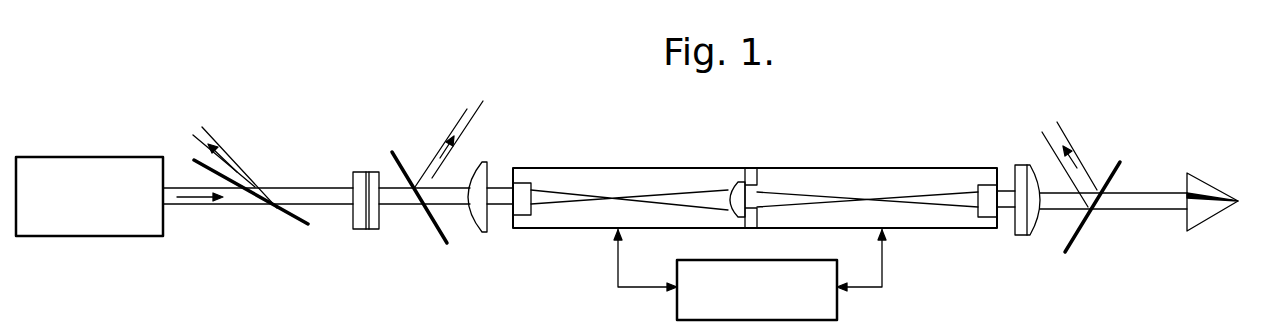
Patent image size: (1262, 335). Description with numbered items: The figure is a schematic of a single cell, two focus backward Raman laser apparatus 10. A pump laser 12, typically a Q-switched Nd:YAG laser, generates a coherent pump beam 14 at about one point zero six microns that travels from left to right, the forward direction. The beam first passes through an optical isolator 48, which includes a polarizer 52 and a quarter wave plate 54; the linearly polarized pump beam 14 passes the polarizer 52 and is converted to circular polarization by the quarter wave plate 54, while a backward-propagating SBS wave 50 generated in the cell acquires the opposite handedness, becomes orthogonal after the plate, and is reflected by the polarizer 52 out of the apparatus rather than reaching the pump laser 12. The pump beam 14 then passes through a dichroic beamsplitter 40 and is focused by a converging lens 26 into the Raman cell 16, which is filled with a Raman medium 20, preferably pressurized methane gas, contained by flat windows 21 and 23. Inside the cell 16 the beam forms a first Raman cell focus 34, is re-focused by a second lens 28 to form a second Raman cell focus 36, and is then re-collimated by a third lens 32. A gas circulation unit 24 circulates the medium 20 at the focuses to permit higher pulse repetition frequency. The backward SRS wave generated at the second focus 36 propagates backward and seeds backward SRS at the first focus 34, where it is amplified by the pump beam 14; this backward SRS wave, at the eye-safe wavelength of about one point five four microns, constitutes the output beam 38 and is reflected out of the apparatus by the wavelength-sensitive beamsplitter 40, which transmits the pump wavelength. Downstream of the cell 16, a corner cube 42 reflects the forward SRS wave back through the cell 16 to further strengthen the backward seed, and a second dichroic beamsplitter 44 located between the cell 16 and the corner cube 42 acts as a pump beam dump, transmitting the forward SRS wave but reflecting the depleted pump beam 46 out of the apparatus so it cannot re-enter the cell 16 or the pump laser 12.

The single cell, two focus backward Raman laser apparatus 10 is at (890, 72).
The pump laser 12 is at (23, 157).
The pump beam 14 is at (200, 206).
The Raman cell 16 is at (700, 168).
The Raman medium 20 is at (542, 224).
The flat window 21 is at (512, 224).
The flat window 23 is at (977, 183).
The gas circulation unit 24 is at (838, 320).
The converging lens 26 is at (477, 232).
The second lens 28 is at (733, 178).
The third lens 32 is at (1017, 165).
The first Raman cell focus 34 is at (616, 198).
The second Raman cell focus 36 is at (873, 198).
The output beam 38 is at (438, 152).
The dichroic beamsplitter 40 is at (399, 160).
The corner cube 42 is at (1214, 197).
The dichroic beamsplitter 44 is at (1078, 236).
The depleted pump beam 46 is at (1085, 188).
The optical isolator 48 is at (288, 158).
The SBS wave 50 is at (231, 157).
The polarizer 52 is at (293, 222).
The quarter wave plate 54 is at (354, 173).